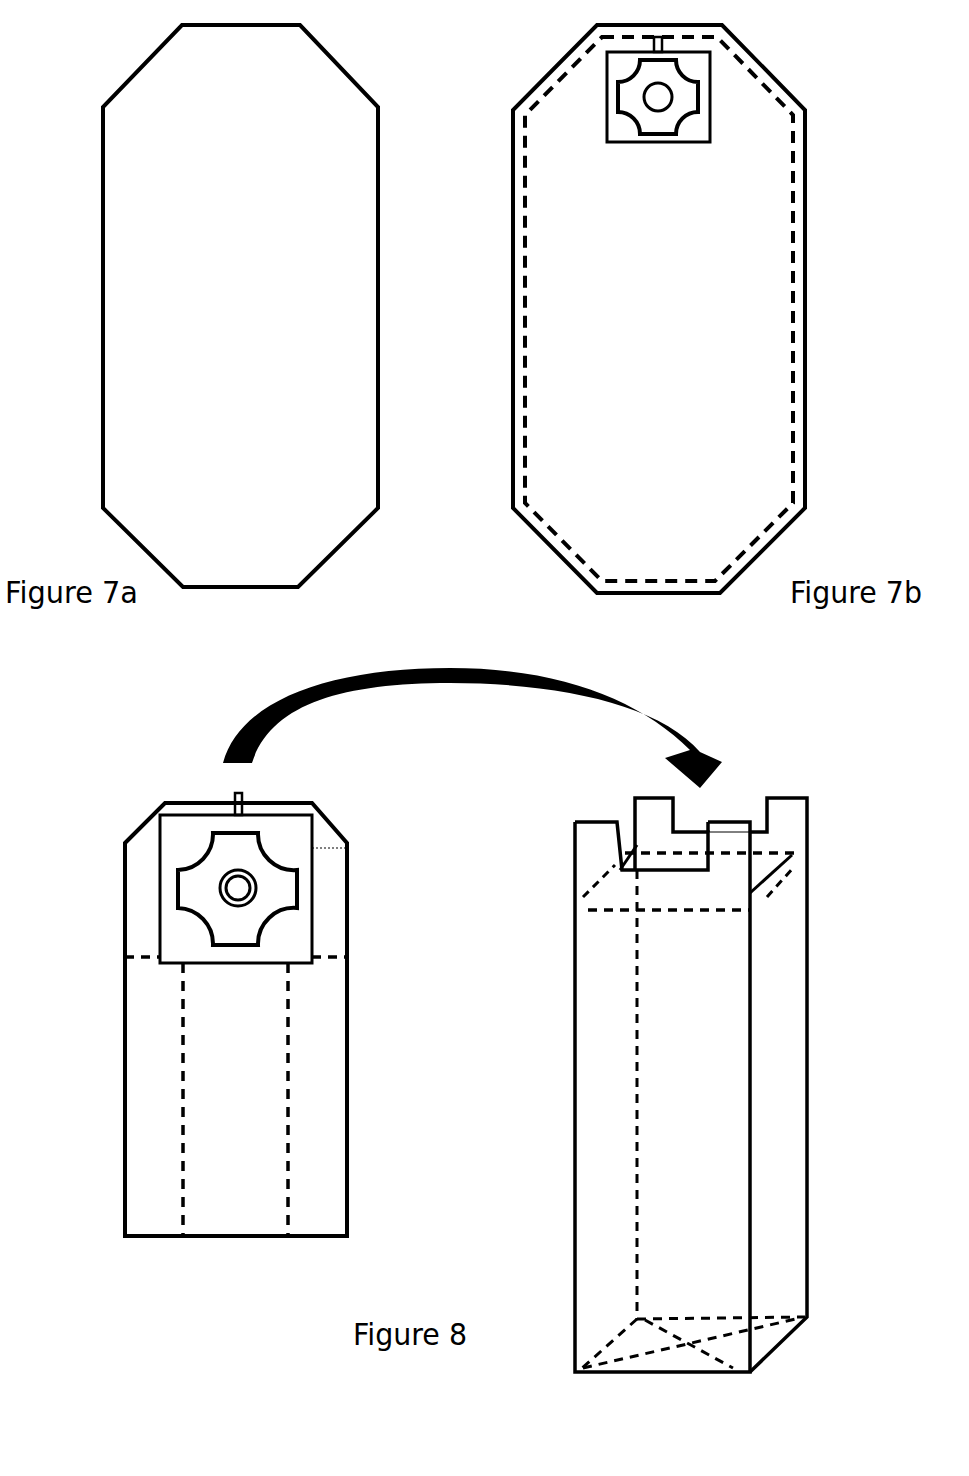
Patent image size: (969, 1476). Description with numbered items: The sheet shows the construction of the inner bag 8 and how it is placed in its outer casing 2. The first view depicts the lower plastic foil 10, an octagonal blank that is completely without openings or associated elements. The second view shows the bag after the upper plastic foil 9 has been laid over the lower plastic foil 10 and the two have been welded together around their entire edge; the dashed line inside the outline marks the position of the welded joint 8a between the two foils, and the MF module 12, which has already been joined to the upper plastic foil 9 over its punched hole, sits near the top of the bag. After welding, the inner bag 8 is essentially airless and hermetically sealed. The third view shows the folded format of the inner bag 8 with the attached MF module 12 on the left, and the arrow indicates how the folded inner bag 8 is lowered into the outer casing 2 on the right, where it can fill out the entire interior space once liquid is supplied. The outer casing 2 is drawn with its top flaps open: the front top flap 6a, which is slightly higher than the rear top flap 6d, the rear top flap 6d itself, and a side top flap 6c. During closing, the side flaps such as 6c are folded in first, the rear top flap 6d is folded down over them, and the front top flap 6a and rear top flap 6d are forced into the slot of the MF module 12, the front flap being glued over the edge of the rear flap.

In FIG. 7A, the lower plastic foil 10 is at (380, 210).
In FIG. 7B, the welded joint 8a is at (513, 370).
In FIG. 7B, the upper plastic foil 9 is at (513, 483).
In FIG. 7B, the MF module 12 is at (607, 80).
In FIG. 8, the MF module 12 is at (158, 880).
In FIG. 8, the inner bag 8 is at (125, 1062).
In FIG. 8, the outer casing 2 is at (688, 1085).
In FIG. 8, the front top flap 6a is at (691, 1085).
In FIG. 8, the side top flap 6c is at (793, 883).
In FIG. 8, the rear top flap 6d is at (807, 823).